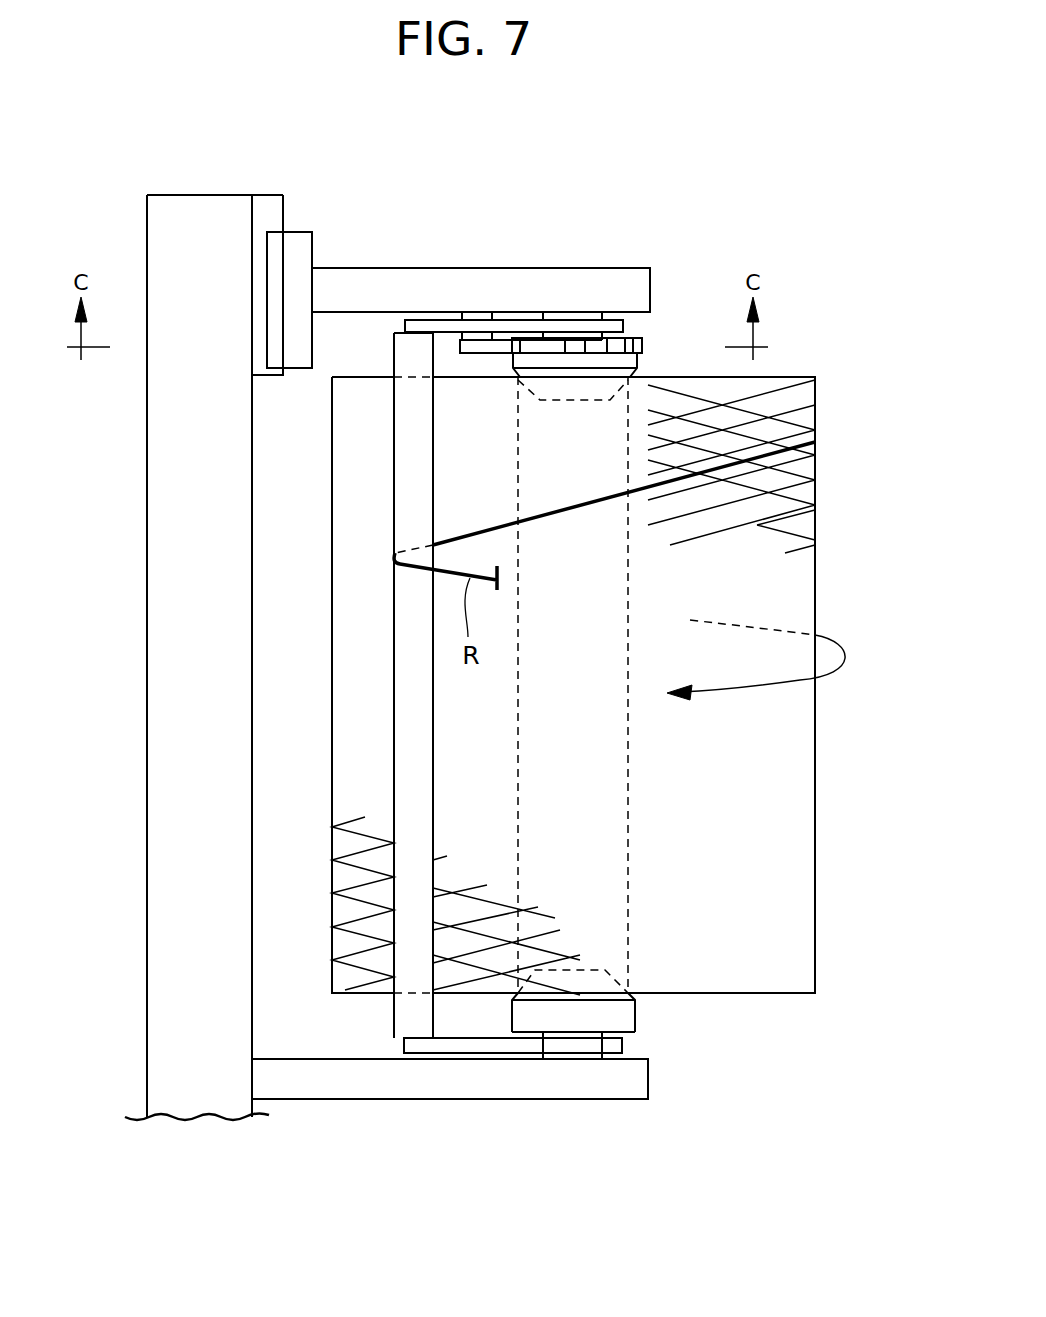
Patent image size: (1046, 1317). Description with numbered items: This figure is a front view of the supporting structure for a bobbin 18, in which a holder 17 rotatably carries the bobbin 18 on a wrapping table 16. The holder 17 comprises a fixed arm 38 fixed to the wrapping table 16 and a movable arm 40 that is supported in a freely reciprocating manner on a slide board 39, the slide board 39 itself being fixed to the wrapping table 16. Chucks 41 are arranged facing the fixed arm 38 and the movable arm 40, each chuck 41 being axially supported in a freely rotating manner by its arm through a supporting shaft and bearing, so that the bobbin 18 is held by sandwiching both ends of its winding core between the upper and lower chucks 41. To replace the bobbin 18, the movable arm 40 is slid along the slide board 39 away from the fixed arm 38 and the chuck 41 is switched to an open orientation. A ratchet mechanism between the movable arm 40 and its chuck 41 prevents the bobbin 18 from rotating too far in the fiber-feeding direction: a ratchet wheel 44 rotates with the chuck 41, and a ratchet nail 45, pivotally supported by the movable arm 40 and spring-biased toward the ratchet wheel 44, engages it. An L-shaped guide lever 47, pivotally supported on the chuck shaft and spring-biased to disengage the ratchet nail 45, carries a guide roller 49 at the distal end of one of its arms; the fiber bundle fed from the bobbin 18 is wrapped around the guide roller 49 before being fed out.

The wrapping table 16 is at (172, 490).
The holder 17 is at (591, 270).
The bobbin 18 is at (817, 852).
The fixed arm 38 is at (630, 1078).
The slide board 39 is at (283, 215).
The movable arm 40 is at (448, 268).
The chuck 41 is at (537, 370).
The ratchet wheel 44 is at (577, 352).
The ratchet nail 45 is at (500, 345).
The guide lever 47 is at (433, 325).
The guide roller 49 is at (422, 722).